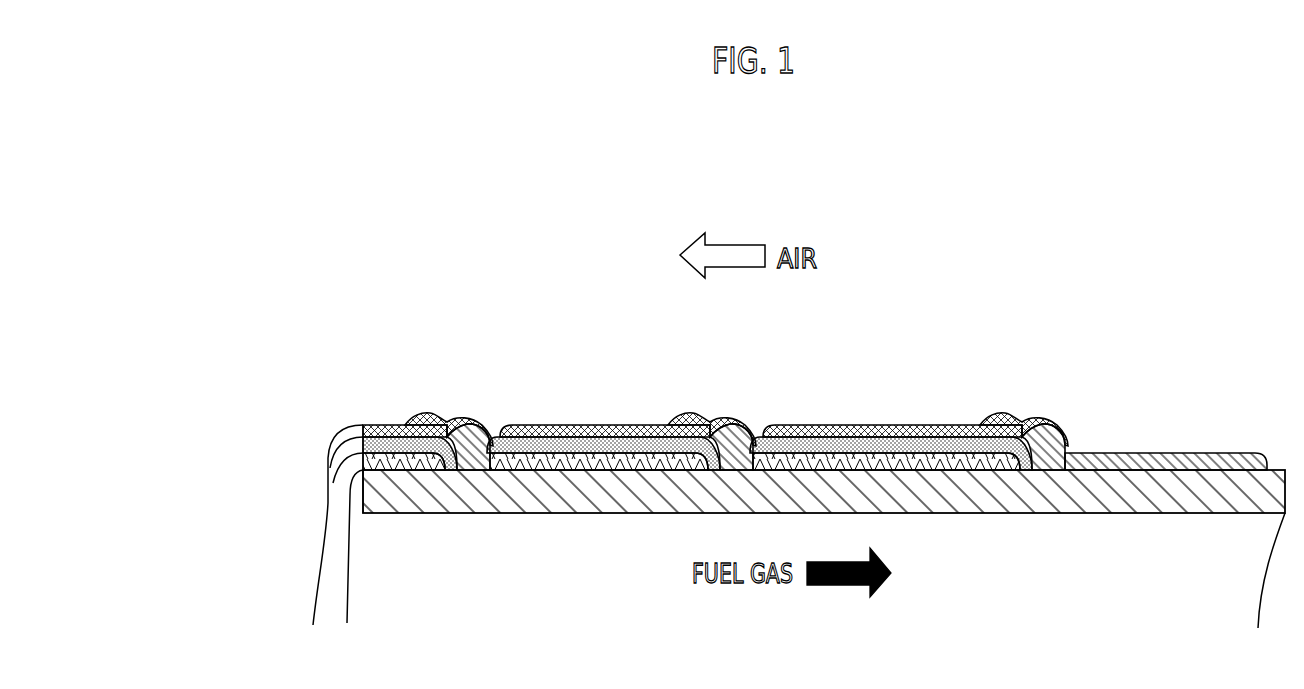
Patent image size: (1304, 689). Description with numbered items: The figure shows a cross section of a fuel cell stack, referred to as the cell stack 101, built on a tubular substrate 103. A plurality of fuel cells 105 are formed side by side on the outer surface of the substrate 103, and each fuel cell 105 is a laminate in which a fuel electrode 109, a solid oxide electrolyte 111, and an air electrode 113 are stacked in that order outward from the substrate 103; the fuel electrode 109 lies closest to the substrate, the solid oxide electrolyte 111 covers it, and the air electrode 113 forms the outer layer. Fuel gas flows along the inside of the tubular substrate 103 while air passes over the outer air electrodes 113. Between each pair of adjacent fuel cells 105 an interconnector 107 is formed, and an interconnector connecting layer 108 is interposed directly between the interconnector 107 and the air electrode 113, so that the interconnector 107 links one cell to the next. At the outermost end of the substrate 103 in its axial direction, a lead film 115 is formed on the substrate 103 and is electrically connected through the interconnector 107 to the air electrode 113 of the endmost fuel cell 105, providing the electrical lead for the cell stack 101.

The cell stack 101 is at (503, 307).
The tubular substrate 103 is at (1235, 485).
The fuel cell 105 is at (205, 405).
The interconnector 107 is at (443, 440).
The interconnector connecting layer 108 is at (478, 420).
The fuel electrode 109 is at (330, 488).
The solid oxide electrolyte 111 is at (330, 458).
The air electrode 113 is at (330, 436).
The lead film 115 is at (1118, 455).